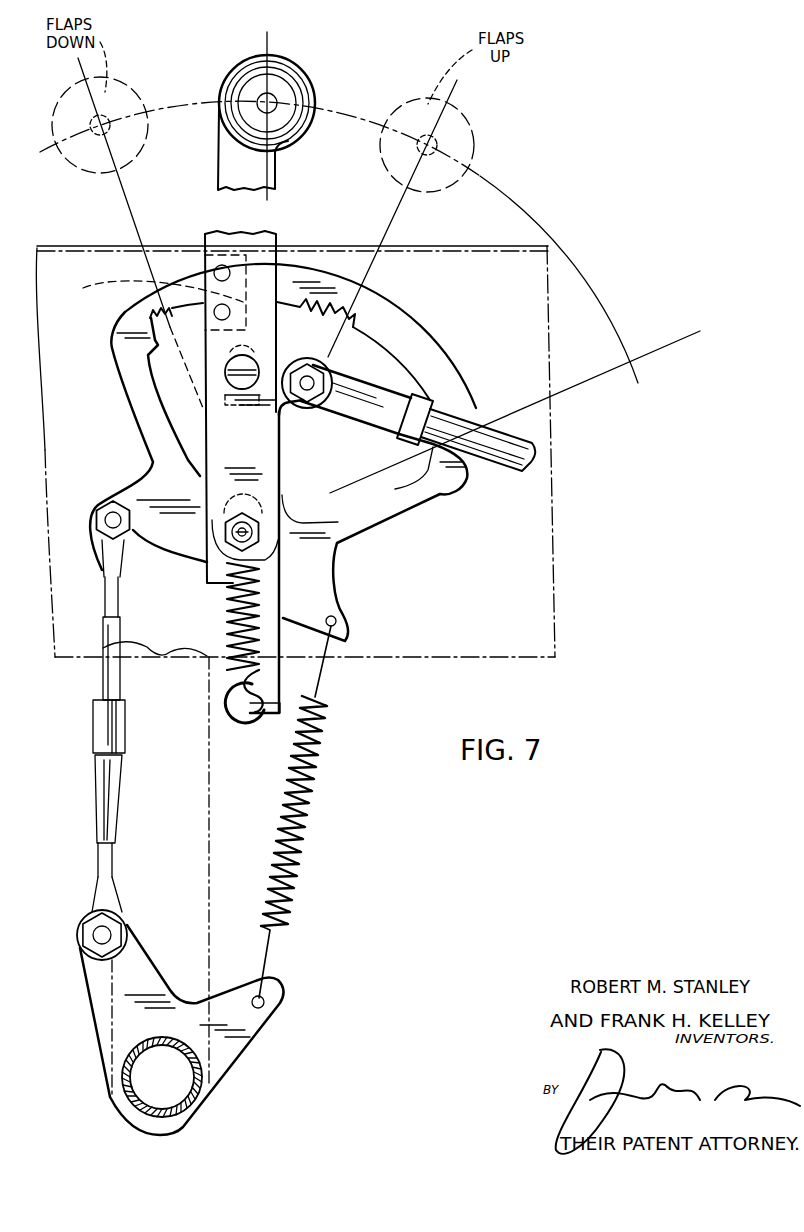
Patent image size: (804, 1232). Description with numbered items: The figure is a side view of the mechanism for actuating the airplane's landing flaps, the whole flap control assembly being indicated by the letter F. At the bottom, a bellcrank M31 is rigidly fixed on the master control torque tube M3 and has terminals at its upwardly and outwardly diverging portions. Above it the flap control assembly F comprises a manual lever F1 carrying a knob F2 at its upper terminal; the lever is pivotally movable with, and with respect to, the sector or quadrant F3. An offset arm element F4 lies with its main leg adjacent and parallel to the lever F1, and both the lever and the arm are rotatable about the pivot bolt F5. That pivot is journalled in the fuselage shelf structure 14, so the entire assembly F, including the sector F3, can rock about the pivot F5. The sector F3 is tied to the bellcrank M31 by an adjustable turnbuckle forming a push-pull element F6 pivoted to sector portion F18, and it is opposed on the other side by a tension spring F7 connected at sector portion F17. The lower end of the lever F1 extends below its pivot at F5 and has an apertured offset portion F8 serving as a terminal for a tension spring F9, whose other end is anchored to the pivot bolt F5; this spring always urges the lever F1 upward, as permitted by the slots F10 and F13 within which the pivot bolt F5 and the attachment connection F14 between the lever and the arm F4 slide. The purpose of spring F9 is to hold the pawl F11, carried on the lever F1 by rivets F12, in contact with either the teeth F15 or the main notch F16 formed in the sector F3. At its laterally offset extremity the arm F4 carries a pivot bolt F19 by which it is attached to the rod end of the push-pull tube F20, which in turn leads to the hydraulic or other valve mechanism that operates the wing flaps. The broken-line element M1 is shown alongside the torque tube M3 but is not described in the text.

The flap control assembly F is at (348, 90).
The fuselage shelf structure 14 is at (475, 243).
The manual lever F1 is at (225, 170).
The knob F2 is at (245, 80).
The sector or quadrant F3 is at (430, 358).
The offset arm element F4 is at (262, 455).
The pivot bolt F5 is at (258, 532).
The push-pull element F6 is at (100, 728).
The tension spring F7 is at (307, 823).
The apertured offset portion F8 is at (275, 712).
The tension spring F9 is at (227, 622).
The slot F10 is at (213, 505).
The pawl F11 is at (150, 290).
The rivets F12 is at (218, 270).
The slot F13 is at (237, 400).
The attachment connection F14 is at (232, 380).
The teeth F15 is at (150, 313).
The main notch F16 is at (337, 300).
The sector portion F17 is at (348, 622).
The sector portion F18 is at (94, 543).
The pivot bolt F19 is at (307, 392).
The push-pull tube F20 is at (504, 466).
The motor axis M1 is at (188, 853).
The master control torque tube M3 is at (195, 1112).
The bellcrank M31 is at (246, 1047).